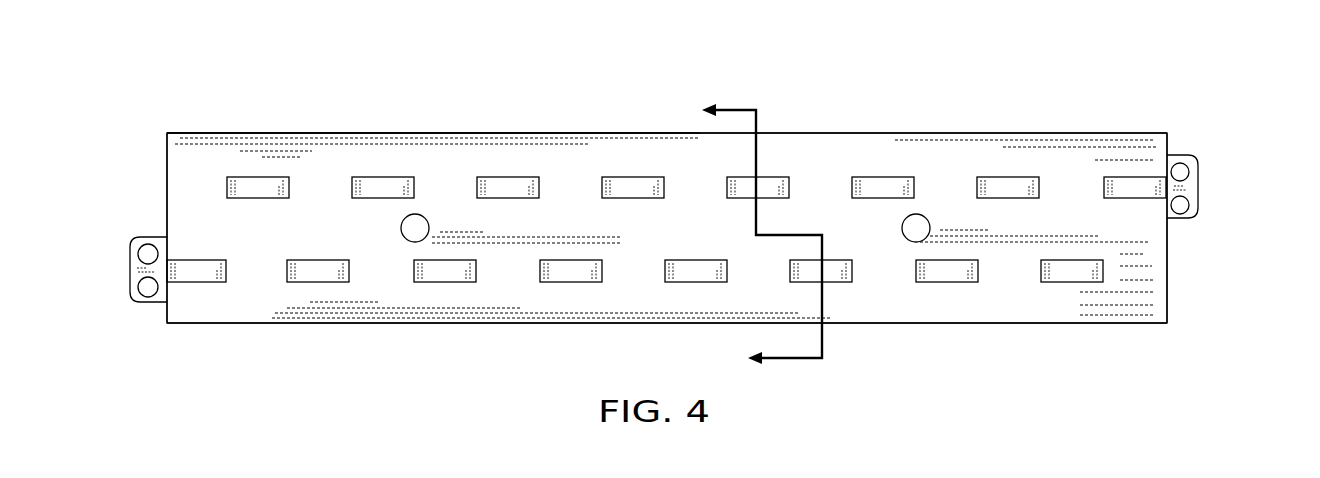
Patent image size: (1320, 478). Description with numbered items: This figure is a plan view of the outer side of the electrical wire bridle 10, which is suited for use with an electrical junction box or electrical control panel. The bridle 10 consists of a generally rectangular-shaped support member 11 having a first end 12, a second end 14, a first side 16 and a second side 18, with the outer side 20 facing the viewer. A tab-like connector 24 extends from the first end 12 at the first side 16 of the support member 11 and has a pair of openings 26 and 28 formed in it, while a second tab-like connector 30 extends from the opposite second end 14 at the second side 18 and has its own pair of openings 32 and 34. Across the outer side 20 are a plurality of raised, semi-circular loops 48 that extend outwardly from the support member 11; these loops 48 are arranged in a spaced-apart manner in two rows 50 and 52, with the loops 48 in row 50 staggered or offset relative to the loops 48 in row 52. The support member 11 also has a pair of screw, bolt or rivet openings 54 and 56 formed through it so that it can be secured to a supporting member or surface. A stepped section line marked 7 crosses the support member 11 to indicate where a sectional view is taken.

The electrical wire bridle 10 is at (907, 124).
The support member 11 is at (396, 128).
The first end 12 is at (166, 147).
The second end 14 is at (1168, 271).
The first side 16 is at (590, 325).
The second side 18 is at (842, 132).
The outer side 20 is at (586, 222).
The tab-like connector 24 is at (143, 312).
The opening 26 is at (147, 288).
The opening 28 is at (143, 253).
The tab-like connector 30 is at (1208, 176).
The opening 32 is at (1186, 205).
The opening 34 is at (1183, 166).
The raised semi-circular loop 48 is at (447, 280).
The row of loops 50 is at (378, 275).
The row of loops 52 is at (452, 178).
The screw, bolt or rivet opening 54 is at (401, 229).
The screw, bolt or rivet opening 56 is at (922, 221).
The section line 7- 7 is at (773, 235).